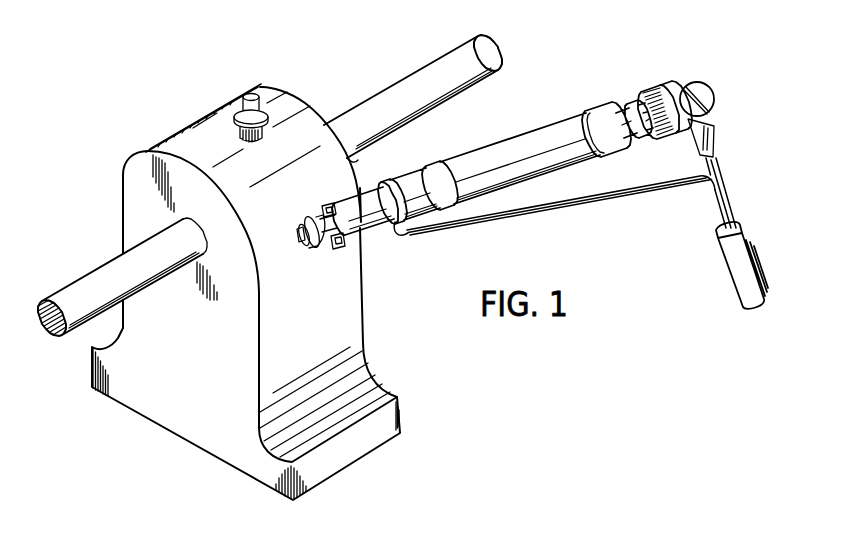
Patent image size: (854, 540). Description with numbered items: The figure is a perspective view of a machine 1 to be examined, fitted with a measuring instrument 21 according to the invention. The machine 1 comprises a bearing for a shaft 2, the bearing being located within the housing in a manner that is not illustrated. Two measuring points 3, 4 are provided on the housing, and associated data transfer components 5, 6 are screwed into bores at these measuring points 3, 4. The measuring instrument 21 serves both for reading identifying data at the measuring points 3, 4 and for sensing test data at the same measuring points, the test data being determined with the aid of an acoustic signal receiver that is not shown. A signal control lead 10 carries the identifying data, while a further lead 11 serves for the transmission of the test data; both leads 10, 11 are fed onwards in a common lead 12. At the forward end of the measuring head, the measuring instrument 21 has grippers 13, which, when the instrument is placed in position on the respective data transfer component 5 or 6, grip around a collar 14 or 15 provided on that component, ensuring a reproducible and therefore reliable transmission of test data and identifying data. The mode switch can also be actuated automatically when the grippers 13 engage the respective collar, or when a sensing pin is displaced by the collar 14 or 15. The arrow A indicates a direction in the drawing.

The machine 1 is at (149, 400).
The shaft 2 is at (93, 288).
The measuring point 3 is at (243, 97).
The measuring point 4 is at (293, 220).
The data transfer component 5 is at (257, 110).
The data transfer component 6 is at (318, 243).
The signal control lead 10 is at (568, 206).
The further lead 11 is at (723, 193).
The common lead 12 is at (758, 273).
The grippers 13 is at (343, 246).
The collar 14 is at (228, 113).
The collar 15 is at (307, 243).
The measuring instrument 21 is at (530, 116).
The direction of movement A is at (380, 252).